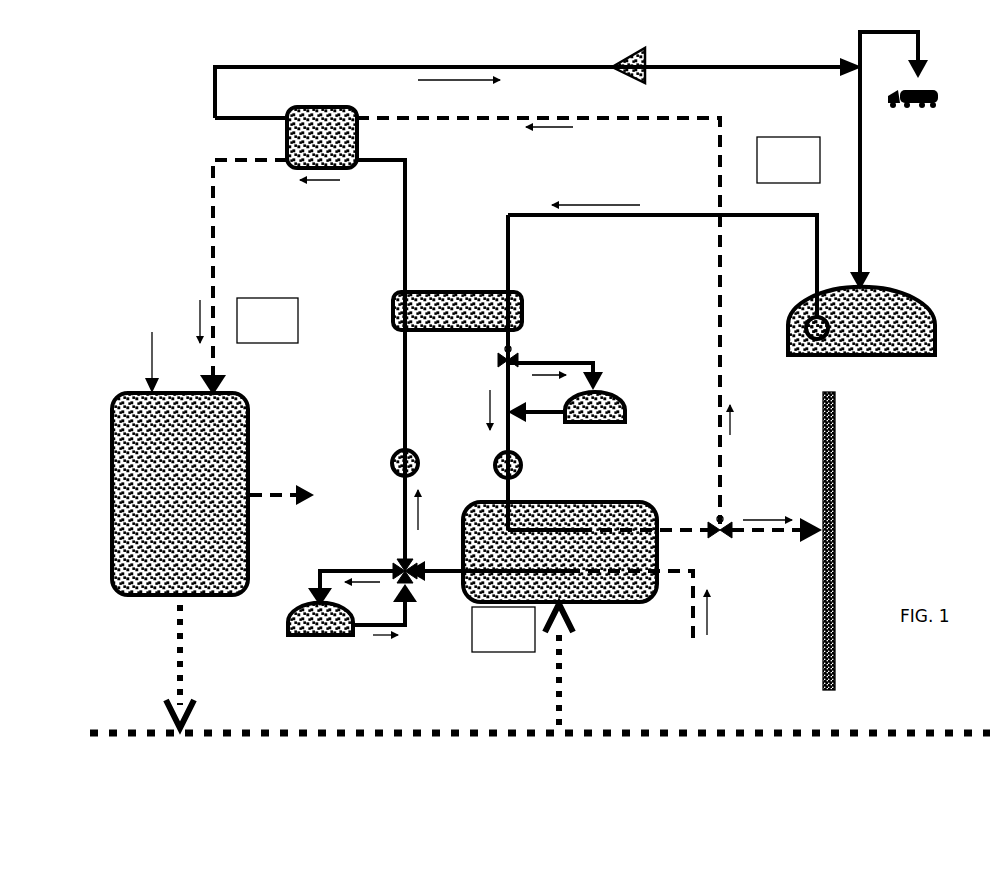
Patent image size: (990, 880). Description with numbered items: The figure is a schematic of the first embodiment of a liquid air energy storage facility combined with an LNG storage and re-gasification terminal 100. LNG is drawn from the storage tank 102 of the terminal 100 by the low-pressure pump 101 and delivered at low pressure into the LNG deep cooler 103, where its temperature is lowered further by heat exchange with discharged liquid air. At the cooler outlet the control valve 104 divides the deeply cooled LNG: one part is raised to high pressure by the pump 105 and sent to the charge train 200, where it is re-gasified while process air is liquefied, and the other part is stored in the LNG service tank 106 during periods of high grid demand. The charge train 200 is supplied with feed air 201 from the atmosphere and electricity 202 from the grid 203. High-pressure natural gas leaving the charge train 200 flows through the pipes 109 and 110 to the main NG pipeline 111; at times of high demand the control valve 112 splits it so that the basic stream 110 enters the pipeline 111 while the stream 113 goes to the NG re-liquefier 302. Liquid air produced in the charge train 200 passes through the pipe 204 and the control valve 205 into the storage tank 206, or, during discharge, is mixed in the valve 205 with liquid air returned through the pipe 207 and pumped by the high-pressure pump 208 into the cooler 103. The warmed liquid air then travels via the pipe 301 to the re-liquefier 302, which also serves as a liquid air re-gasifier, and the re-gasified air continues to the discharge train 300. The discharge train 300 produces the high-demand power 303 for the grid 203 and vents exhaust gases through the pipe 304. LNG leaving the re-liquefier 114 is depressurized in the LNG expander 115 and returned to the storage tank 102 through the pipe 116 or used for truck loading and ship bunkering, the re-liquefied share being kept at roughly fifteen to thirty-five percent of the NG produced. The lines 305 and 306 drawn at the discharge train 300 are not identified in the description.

The LNGSR terminal 100 is at (788, 160).
The low-pressure pump 101 is at (828, 322).
The storage tank 102 is at (929, 308).
The LNG deep cooler 103 is at (522, 316).
The control valve 104 is at (520, 358).
The pump 105 is at (499, 463).
The LNG service tank 106 is at (620, 394).
The pipe 109 is at (656, 528).
The pipe 110 is at (788, 536).
The main NG pipeline 111 is at (822, 602).
The control valve 112 is at (722, 524).
The pipe 113 is at (718, 280).
The re-liquefier 114 is at (647, 81).
The LNG expander 115 is at (860, 185).
The pipe 116 is at (937, 106).
The charge train 200 is at (503, 629).
The feed air 201 is at (692, 610).
The electricity 202 is at (553, 667).
The grid 203 is at (655, 733).
The pipe 204 is at (462, 574).
The control valve 205 is at (396, 563).
The tank 206 is at (323, 637).
The pipe 207 is at (374, 627).
The high-pressure pump 208 is at (394, 456).
The discharge train 300 is at (267, 320).
The pipe 301 is at (405, 204).
The NG re-liquefier 302 is at (357, 111).
The high demand power 303 is at (214, 254).
The pipe 304 is at (152, 335).
The outlet line to ground 305 is at (178, 639).
The outlet 306 is at (274, 497).